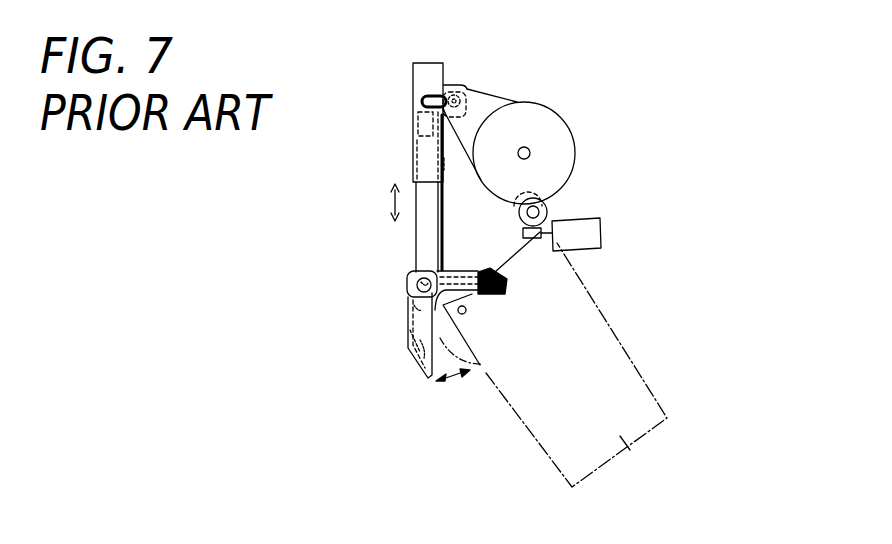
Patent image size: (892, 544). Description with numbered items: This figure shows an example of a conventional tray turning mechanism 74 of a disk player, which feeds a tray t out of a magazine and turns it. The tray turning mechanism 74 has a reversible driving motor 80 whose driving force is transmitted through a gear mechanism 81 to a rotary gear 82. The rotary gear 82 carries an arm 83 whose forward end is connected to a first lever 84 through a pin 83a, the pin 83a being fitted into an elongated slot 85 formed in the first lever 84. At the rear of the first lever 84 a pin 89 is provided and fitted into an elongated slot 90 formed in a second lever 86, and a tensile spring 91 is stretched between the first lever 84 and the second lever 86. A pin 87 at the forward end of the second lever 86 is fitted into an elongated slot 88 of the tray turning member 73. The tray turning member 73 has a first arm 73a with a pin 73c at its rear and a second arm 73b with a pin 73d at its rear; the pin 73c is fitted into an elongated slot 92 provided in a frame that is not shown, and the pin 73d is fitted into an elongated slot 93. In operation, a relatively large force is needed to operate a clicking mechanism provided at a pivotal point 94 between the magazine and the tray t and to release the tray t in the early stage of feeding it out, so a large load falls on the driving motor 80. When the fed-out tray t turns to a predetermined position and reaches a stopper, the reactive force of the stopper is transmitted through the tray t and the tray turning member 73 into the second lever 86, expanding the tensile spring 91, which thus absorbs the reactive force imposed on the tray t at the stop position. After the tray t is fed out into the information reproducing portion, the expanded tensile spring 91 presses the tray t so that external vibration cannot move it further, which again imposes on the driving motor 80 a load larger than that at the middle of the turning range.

The tray turning member 73 is at (408, 307).
The first arm 73a is at (408, 325).
The second arm 73b is at (505, 285).
The pin 73c is at (405, 307).
The pin 73d is at (481, 270).
The tray turning mechanism 74 is at (613, 133).
The driving motor 80 is at (601, 229).
The gear mechanism 81 is at (560, 202).
The rotary gear 82 is at (545, 120).
The arm 83 is at (485, 98).
The pin 83a is at (455, 87).
The first lever 84 is at (425, 80).
The elongated slot 85 is at (422, 100).
The second lever 86 is at (416, 230).
The pin 87 is at (407, 278).
The elongated slot 88 is at (410, 292).
The pin 89 is at (418, 122).
The elongated slot 90 is at (418, 137).
The tensile spring 91 is at (447, 160).
The elongated slot 92 is at (410, 352).
The elongated slot 93 is at (455, 270).
The pivotal point 94 is at (466, 312).
The tray t is at (625, 443).